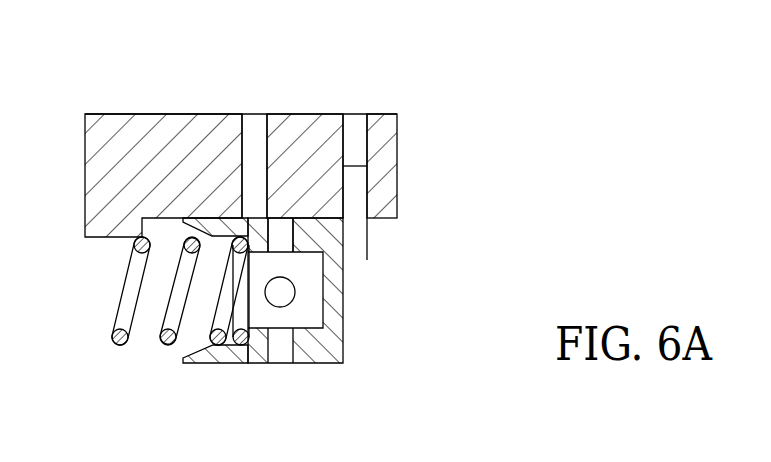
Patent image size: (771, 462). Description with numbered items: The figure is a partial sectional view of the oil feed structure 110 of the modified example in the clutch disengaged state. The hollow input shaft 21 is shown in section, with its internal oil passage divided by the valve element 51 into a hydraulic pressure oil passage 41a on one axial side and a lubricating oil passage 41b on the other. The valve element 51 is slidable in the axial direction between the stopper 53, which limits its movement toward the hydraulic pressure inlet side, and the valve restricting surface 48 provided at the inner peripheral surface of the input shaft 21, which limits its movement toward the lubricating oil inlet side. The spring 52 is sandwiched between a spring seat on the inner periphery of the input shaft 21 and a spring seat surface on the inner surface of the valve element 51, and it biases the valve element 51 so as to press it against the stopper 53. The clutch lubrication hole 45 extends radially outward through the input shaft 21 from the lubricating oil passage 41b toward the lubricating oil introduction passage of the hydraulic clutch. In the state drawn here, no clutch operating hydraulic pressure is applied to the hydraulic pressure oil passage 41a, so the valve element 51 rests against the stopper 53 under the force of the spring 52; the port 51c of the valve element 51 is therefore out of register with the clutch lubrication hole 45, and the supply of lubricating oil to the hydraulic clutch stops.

The oil feed structure 110 is at (463, 124).
The input shaft 21 is at (121, 113).
The clutch lubrication hole 45 is at (255, 130).
The valve restricting surface 48 is at (176, 235).
The valve element 51 is at (344, 348).
The port 51c is at (280, 240).
The spring 52 is at (120, 346).
The stopper 53 is at (355, 237).
The hydraulic pressure oil passage 41a is at (456, 313).
The lubricating oil passage 41b is at (67, 315).